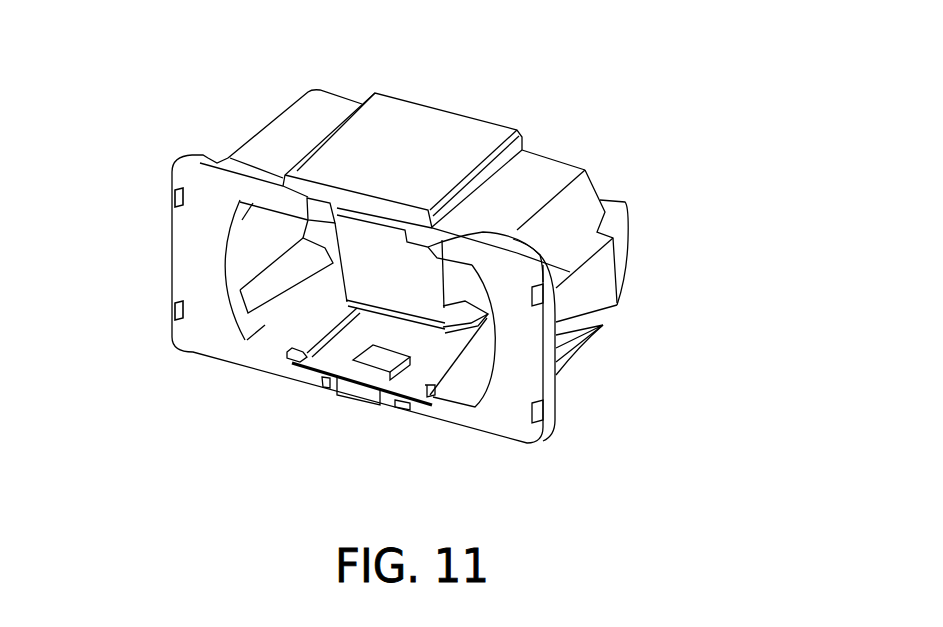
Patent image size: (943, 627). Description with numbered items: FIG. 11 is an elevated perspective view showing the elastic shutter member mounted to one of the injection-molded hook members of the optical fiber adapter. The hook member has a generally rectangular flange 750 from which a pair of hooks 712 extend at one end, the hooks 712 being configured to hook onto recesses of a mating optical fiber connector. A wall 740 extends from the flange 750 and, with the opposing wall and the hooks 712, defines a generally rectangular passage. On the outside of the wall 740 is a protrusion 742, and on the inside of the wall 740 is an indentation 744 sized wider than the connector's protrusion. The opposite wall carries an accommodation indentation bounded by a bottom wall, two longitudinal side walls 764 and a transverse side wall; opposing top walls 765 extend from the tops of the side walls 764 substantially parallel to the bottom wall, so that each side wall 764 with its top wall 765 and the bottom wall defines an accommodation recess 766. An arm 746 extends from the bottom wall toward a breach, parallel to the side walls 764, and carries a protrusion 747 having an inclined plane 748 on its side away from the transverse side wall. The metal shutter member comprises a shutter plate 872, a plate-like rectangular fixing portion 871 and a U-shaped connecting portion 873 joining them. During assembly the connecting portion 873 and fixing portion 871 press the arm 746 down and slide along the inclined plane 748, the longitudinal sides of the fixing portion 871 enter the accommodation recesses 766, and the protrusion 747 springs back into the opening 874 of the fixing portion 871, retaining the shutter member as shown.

The hooks 712 is at (338, 222).
The indentation 744 is at (334, 222).
The protrusion 742 is at (443, 147).
The wall 740 is at (537, 175).
The shutter plate 872 is at (613, 240).
The connecting portion 873 is at (468, 318).
The flange 750 is at (602, 325).
The top walls 765 is at (303, 342).
The longitudinal side walls 764 is at (292, 353).
The accommodation recess 766 is at (293, 367).
The opening 874 is at (338, 367).
The arm 746 is at (348, 391).
The protrusion 747 is at (345, 380).
The inclined plane 748 is at (378, 355).
The fixing portion 871 is at (417, 366).